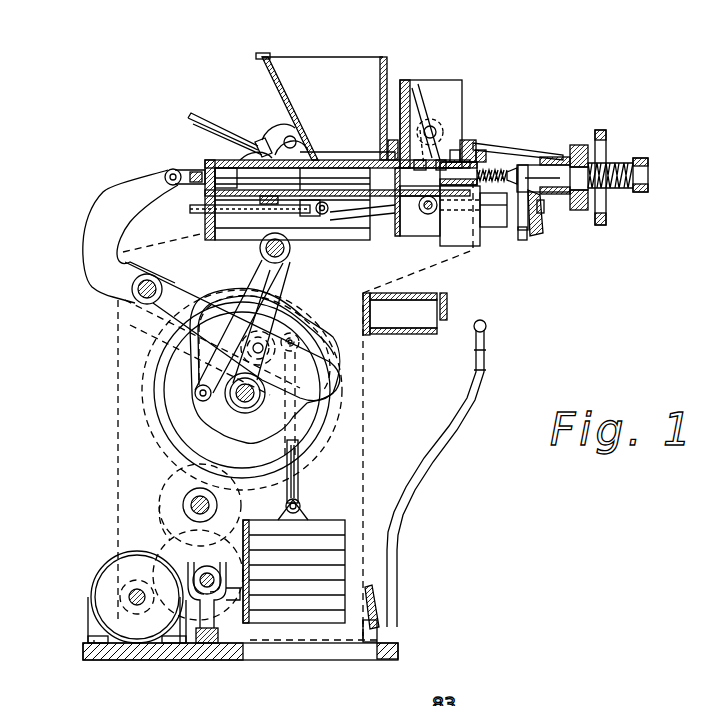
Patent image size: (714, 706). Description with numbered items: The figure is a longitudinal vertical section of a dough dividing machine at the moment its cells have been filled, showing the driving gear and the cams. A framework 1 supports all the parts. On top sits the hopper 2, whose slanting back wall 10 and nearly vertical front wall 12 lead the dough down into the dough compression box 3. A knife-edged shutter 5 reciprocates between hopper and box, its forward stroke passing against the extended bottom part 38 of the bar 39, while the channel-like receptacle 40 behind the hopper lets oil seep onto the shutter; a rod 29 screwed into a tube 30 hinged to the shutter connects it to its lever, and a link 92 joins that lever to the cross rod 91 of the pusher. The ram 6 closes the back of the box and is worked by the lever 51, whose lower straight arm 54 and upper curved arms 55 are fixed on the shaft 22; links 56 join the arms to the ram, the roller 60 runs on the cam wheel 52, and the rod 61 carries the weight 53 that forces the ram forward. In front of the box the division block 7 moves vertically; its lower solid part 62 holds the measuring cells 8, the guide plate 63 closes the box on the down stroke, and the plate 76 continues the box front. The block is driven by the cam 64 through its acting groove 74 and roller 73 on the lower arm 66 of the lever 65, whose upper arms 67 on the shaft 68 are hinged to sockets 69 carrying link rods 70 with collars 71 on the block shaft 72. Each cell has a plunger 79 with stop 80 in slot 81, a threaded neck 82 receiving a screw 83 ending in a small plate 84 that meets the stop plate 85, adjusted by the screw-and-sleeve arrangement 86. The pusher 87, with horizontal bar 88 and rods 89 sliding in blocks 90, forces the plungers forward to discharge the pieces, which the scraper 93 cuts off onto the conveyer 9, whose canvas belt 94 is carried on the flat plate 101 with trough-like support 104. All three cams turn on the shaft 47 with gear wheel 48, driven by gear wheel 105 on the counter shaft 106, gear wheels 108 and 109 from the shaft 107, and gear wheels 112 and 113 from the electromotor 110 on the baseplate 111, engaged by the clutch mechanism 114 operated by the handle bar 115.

The framework 1 is at (370, 517).
The hopper 2 is at (288, 57).
The dough compression box 3 is at (345, 212).
The shutter 5 is at (321, 160).
The ram 6 is at (371, 160).
The division block 7 is at (446, 92).
The measuring cells 8 is at (412, 202).
The conveyer 9 is at (402, 322).
The back wall 10 is at (288, 138).
The front wall 12 is at (380, 92).
The shaft 22 is at (130, 292).
The rod 29 is at (192, 116).
The tube 30 is at (268, 145).
The extended bottom part 38 is at (420, 160).
The bar 39 is at (393, 148).
The channel-like receptacle 40 is at (288, 148).
The shaft 47 is at (185, 398).
The gear wheel 48 is at (157, 440).
The lever 51 is at (64, 248).
The cam wheel 52 is at (196, 400).
The weight 53 is at (347, 545).
The lower straight arm 54 is at (167, 310).
The upper curved arms 55 is at (100, 228).
The links 56 is at (227, 172).
The roller 60 is at (338, 387).
The rod, chain or wire rope 61 is at (300, 482).
The lower solid part 62 is at (398, 699).
The guide plate 63 is at (412, 120).
The cam 64 is at (322, 410).
The lever 65 is at (315, 237).
The lower arm 66 is at (248, 270).
The upper arms 67 is at (306, 252).
The shaft 68 is at (262, 248).
The sockets 69 is at (438, 206).
The link rods 70 is at (440, 162).
The collars 71 is at (434, 160).
The shaft 72 is at (436, 128).
The roller 73 is at (198, 392).
The acting groove 74 is at (300, 318).
The plate 76 is at (434, 212).
The plungers 79 is at (484, 158).
The stops 80 is at (500, 150).
The slots 81 is at (448, 168).
The necks 82 is at (522, 168).
The screws 83 is at (506, 184).
The small plates 84 is at (545, 165).
The stop plate 85 is at (550, 162).
The screw-and-sleeve arrangement 86 is at (618, 166).
The pusher 87 is at (536, 226).
The horizontal bar 88 is at (522, 232).
The horizontal rods 89 is at (490, 228).
The brackets or blocks 90 is at (262, 224).
The cross rod 91 is at (332, 216).
The link 92 is at (193, 212).
The scraper 93 is at (397, 200).
The canvas belt 94 is at (417, 334).
The flat plate 101 is at (365, 337).
The trough-like support 104 is at (415, 300).
The gear wheel 105 is at (182, 492).
The counter shaft 106 is at (190, 504).
The shaft 107 is at (214, 596).
The gear wheel 108 is at (142, 520).
The gear wheel 109 is at (209, 586).
The electromotor 110 is at (104, 560).
The baseplate 111 is at (108, 660).
The gear wheel 112 is at (120, 595).
The gear wheel 113 is at (178, 642).
The clutch mechanism 114 is at (207, 642).
The handle bar 115 is at (400, 572).